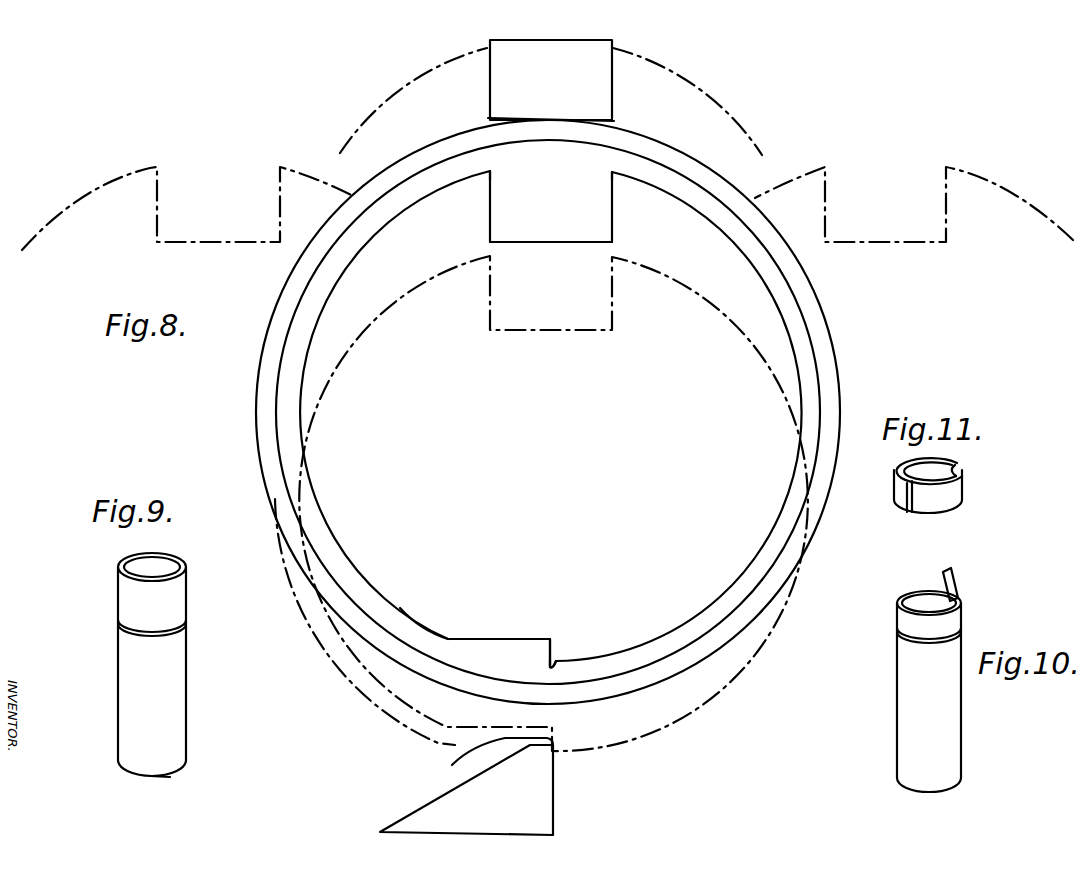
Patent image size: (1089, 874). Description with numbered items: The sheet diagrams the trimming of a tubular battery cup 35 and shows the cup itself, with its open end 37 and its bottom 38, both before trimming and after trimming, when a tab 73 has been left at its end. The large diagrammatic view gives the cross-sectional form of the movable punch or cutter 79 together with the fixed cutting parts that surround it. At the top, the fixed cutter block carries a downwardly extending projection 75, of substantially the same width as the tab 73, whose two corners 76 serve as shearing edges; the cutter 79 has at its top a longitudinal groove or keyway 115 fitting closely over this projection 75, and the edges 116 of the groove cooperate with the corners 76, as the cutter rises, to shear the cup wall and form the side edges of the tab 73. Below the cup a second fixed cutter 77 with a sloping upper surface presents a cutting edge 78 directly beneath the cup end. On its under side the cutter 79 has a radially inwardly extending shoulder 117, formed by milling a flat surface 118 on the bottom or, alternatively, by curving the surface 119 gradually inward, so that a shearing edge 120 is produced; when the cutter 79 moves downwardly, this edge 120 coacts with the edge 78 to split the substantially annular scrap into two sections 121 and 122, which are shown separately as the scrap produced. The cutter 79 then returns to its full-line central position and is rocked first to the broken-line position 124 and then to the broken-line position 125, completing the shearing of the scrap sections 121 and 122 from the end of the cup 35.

In FIG. 8, the cup 35 is at (834, 325).
In FIG. 9, the cup 35 is at (176, 681).
In FIG. 10, the cup 35 is at (943, 716).
In FIG. 9, the open end 37 is at (130, 567).
In FIG. 9, the bottom 38 is at (166, 778).
In FIG. 10, the tab 73 is at (958, 583).
In FIG. 8, the projection 75 is at (590, 98).
In FIG. 8, the corners 76 is at (490, 118).
In FIG. 8, the second fixed cutter 77 is at (522, 806).
In FIG. 8, the cutting edge 78 is at (456, 763).
In FIG. 8, the cutter 79 is at (783, 381).
In FIG. 8, the longitudinal groove 115 is at (580, 214).
In FIG. 8, the edges 116 is at (610, 172).
In FIG. 8, the shoulder 117 is at (553, 643).
In FIG. 8, the flat surface 118 is at (497, 637).
In FIG. 8, the surface 119 is at (398, 608).
In FIG. 8, the shearing edge 120 is at (550, 666).
In FIG. 11, the scrap section 121 is at (912, 471).
In FIG. 11, the scrap section 122 is at (955, 505).
In FIG. 8, the broken-line position 124 is at (938, 251).
In FIG. 8, the broken-line position 125 is at (192, 250).